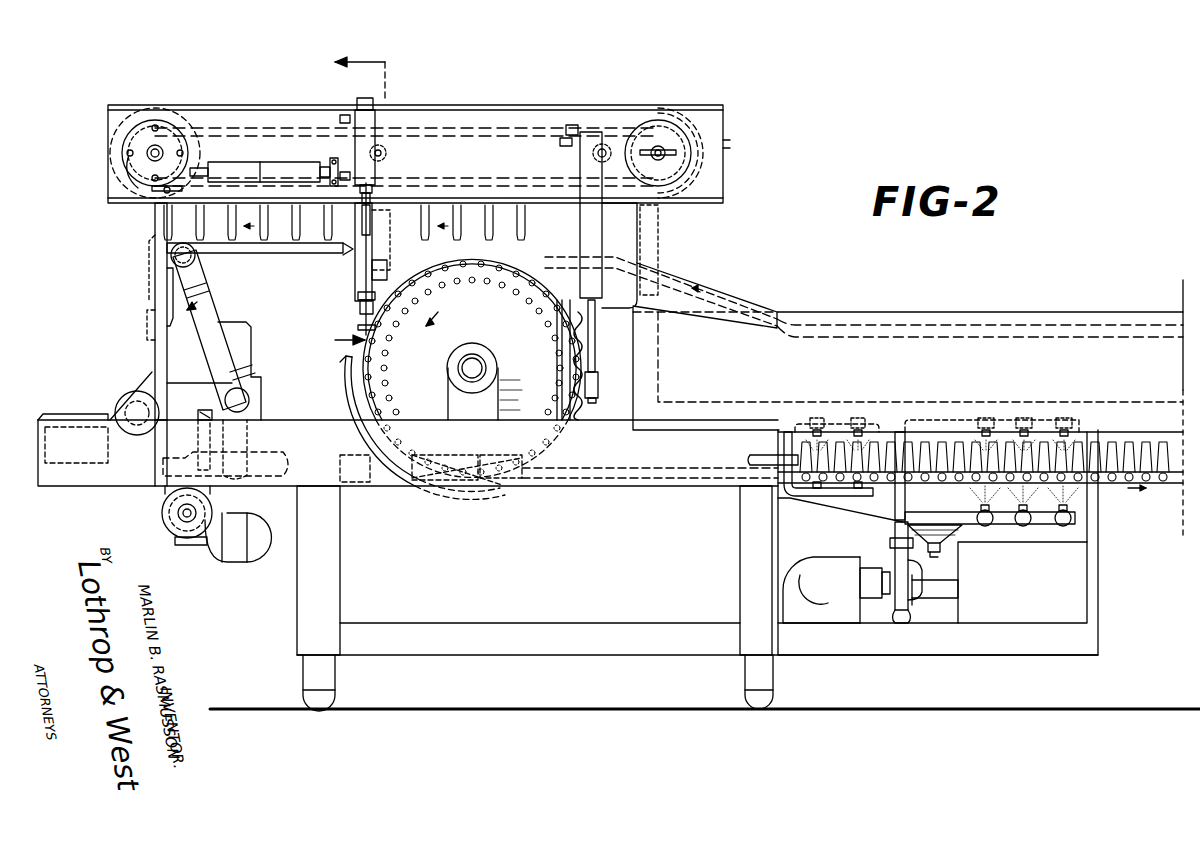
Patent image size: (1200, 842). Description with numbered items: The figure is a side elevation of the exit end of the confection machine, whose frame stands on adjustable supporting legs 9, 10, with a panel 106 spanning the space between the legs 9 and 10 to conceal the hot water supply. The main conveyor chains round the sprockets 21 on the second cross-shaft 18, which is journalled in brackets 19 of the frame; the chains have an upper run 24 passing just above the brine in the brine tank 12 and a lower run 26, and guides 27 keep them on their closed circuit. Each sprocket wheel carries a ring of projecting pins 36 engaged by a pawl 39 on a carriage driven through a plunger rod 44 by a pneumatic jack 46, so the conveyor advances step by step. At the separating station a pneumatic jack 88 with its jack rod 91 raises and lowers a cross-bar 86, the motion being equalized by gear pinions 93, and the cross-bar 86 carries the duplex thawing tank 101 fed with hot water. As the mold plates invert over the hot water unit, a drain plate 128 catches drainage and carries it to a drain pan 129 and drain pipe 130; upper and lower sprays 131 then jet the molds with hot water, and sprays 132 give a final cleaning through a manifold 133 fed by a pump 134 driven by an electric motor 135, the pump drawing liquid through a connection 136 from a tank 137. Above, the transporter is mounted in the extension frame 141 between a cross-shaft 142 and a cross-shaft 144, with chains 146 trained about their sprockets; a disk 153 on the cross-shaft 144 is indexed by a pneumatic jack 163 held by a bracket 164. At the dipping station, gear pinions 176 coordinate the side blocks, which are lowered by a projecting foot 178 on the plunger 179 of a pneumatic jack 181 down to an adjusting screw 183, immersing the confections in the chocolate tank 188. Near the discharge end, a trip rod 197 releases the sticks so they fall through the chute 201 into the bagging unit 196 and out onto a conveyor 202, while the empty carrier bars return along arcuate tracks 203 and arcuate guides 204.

The supporting leg 9 is at (738, 550).
The supporting leg 10 is at (340, 584).
The brine tank 12 is at (651, 208).
The second cross-shaft 18 is at (476, 360).
The brackets 19 is at (440, 382).
The sprockets 21 is at (476, 309).
The upper run 24 is at (971, 318).
The lower run 26 is at (1172, 478).
The guides 27 is at (1116, 318).
The projecting pins 36 is at (396, 416).
The pawl 39 is at (467, 480).
The plunger rod 44 is at (386, 479).
The pneumatic jack 46 is at (296, 454).
The cross-bar 86 is at (594, 392).
The pneumatic jack 88 is at (580, 158).
The jack rod 91 is at (596, 344).
The gear pinion 93 is at (606, 146).
The duplex thawing tank 101 is at (606, 370).
The panel 106 is at (554, 555).
The drain plate 128 is at (356, 394).
The drain pan 129 is at (828, 518).
The drain pipe 130 is at (924, 554).
The upper and lower sprays 131 is at (827, 416).
The sprays 132 is at (1025, 432).
The manifold 133 is at (906, 490).
The pump 134 is at (900, 615).
The electric motor 135 is at (821, 590).
The connection 136 is at (926, 590).
The tank 137 is at (938, 542).
The extension frame 141 is at (500, 110).
The cross-shaft 142 is at (658, 152).
The cross-shaft 144 is at (155, 153).
The chains 146 is at (543, 122).
The disk 153 is at (122, 157).
The pneumatic jack 163 is at (244, 164).
The bracket 164 is at (330, 160).
The gear pinions 176 is at (388, 153).
The projecting foot 178 is at (378, 232).
The plunger 179 is at (374, 190).
The pneumatic jack 181 is at (378, 140).
The adjusting screw 183 is at (357, 318).
The chocolate tank 188 is at (342, 264).
The bagging unit 196 is at (199, 279).
The trip rod 197 is at (153, 190).
The chute 201 is at (152, 252).
The conveyor 202 is at (68, 420).
The arcuate tracks 203 is at (118, 118).
The arcuate guides 204 is at (706, 142).